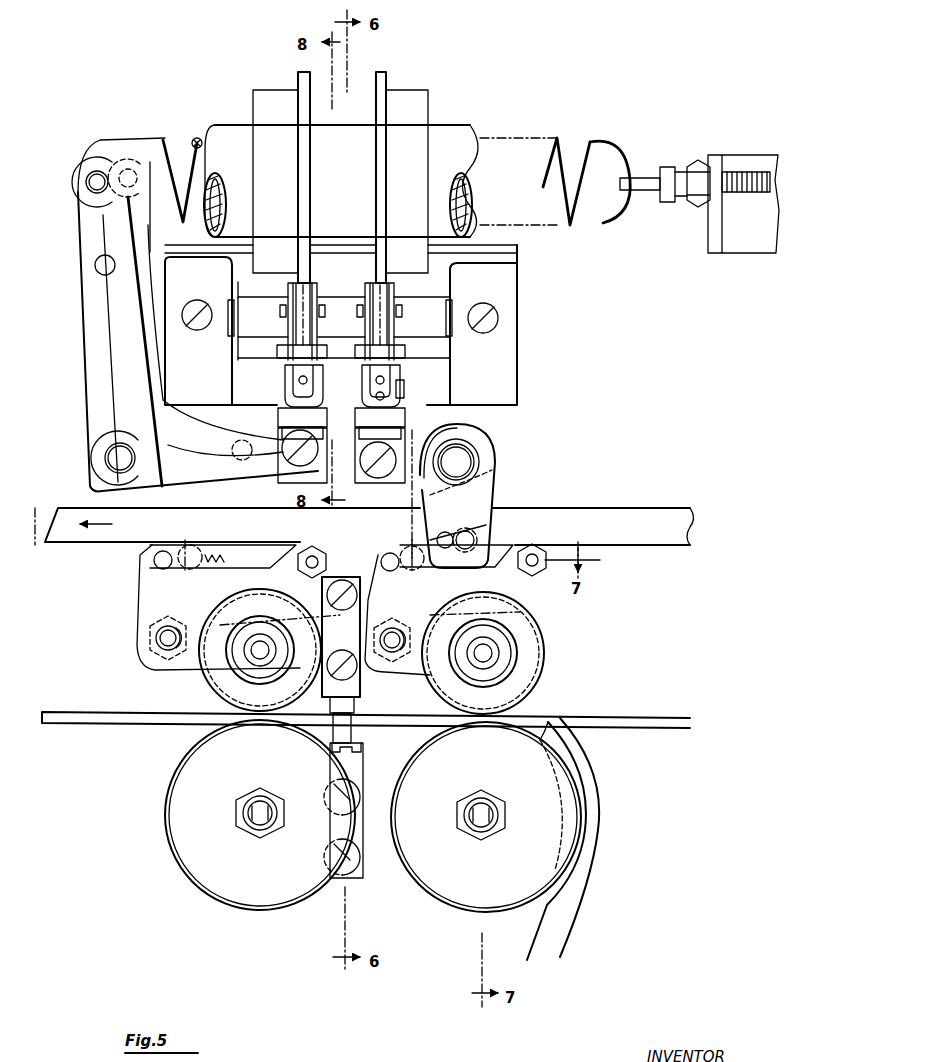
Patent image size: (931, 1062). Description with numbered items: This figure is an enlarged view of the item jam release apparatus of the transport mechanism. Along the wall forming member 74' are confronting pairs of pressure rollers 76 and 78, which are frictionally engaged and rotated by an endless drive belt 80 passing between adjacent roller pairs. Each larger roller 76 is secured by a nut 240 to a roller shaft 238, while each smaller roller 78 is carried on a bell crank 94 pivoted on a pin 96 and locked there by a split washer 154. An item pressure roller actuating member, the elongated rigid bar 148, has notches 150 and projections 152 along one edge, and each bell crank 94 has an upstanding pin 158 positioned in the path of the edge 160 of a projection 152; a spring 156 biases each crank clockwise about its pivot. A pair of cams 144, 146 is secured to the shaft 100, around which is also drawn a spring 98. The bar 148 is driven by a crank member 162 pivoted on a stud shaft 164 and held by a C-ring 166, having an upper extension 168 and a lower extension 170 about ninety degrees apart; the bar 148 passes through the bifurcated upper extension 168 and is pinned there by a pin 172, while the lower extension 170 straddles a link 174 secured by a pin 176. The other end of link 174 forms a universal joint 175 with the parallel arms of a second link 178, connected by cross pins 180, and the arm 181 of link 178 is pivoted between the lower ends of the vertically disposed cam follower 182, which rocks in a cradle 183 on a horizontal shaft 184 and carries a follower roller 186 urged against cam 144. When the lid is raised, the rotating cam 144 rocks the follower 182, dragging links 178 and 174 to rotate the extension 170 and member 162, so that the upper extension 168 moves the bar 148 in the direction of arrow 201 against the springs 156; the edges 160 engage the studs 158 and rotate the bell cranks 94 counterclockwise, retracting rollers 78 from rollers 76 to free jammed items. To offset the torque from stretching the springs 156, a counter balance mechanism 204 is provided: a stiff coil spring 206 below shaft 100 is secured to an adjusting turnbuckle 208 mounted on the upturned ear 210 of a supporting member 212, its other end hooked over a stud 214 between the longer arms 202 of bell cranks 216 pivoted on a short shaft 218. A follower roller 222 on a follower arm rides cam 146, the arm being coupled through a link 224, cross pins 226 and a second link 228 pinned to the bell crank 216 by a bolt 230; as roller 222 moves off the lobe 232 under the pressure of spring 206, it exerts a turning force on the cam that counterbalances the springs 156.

The wall forming member 74' is at (366, 742).
The pressure roller 76 is at (187, 875).
The pressure roller 78 is at (208, 688).
The endless drive belt 80 is at (628, 717).
The bell crank 94 is at (263, 624).
The pin 96 is at (150, 662).
The spring 98 is at (468, 90).
The shaft 100 is at (468, 135).
The cam 144 is at (398, 88).
The cam 146 is at (277, 92).
The actuator bar 148 is at (363, 531).
The notch 150 is at (48, 543).
The projection 152 is at (240, 560).
The split washer 154 is at (147, 633).
The spring 156 is at (300, 550).
The pin 158 is at (167, 552).
The edge 160 is at (183, 547).
The crank member 162 is at (493, 462).
The stud shaft 164 is at (467, 452).
The C-ring 166 is at (480, 460).
The upper extension 168 is at (473, 512).
The lower extension 170 is at (487, 488).
The pin 172 is at (470, 543).
The link 174 is at (395, 418).
The universal joint 175 is at (407, 388).
The pin 176 is at (383, 477).
The link 178 is at (407, 368).
The cross pin 180 is at (400, 397).
The arm 181 is at (400, 350).
The cam follower 182 is at (400, 292).
The cradle 183 is at (366, 325).
The shaft 184 is at (470, 305).
The follower roller 186 is at (387, 297).
The arrow 201 is at (88, 530).
The longer arm 202 is at (175, 314).
The counter balance mechanism 204 is at (202, 103).
The coil spring 206 is at (588, 140).
The adjusting turnbuckle 208 is at (686, 173).
The upturned ear 210 is at (712, 238).
The supporting member 212 is at (745, 252).
The stud 214 is at (88, 182).
The bell crank 216 is at (88, 372).
The short shaft 218 is at (108, 460).
The follower roller 222 is at (307, 310).
The link 224 is at (282, 355).
The cross pin 226 is at (287, 382).
The link 228 is at (278, 410).
The bolt 230 is at (283, 456).
The lobe 232 is at (300, 292).
The roller shaft 238 is at (262, 827).
The nut 240 is at (260, 788).